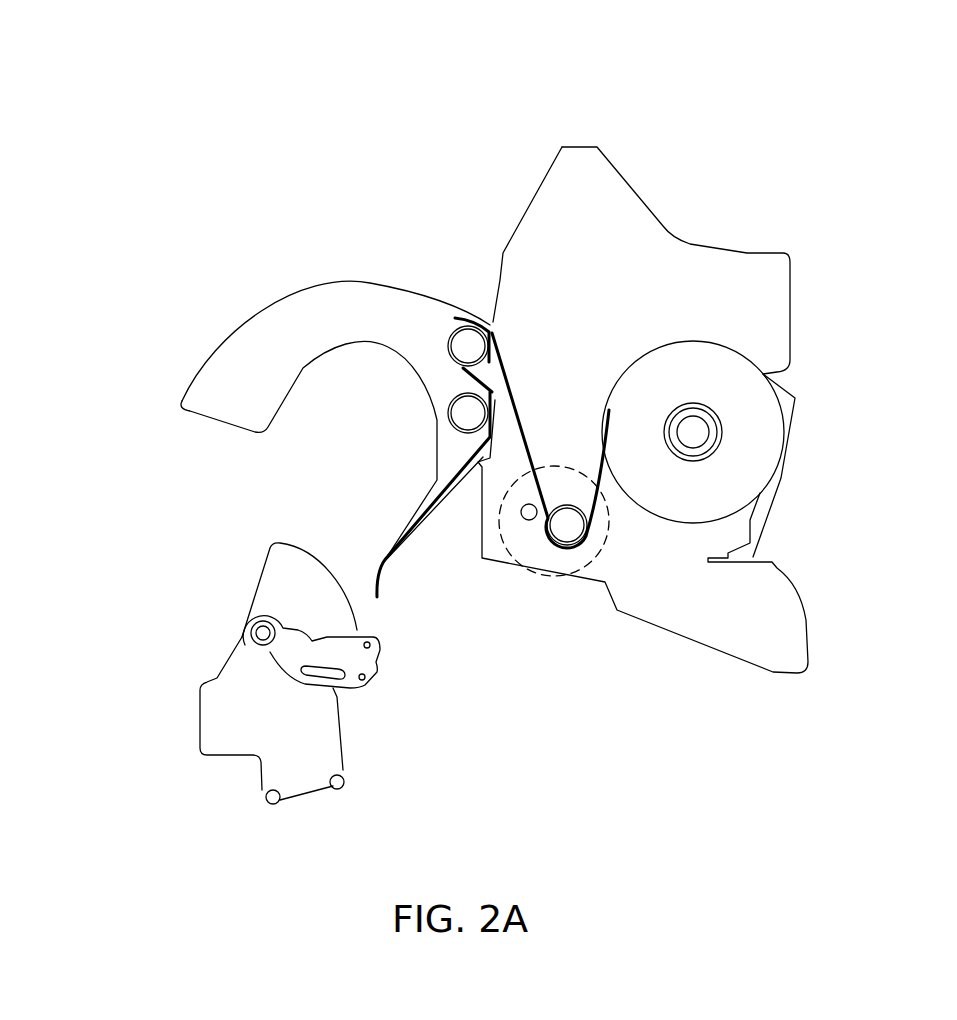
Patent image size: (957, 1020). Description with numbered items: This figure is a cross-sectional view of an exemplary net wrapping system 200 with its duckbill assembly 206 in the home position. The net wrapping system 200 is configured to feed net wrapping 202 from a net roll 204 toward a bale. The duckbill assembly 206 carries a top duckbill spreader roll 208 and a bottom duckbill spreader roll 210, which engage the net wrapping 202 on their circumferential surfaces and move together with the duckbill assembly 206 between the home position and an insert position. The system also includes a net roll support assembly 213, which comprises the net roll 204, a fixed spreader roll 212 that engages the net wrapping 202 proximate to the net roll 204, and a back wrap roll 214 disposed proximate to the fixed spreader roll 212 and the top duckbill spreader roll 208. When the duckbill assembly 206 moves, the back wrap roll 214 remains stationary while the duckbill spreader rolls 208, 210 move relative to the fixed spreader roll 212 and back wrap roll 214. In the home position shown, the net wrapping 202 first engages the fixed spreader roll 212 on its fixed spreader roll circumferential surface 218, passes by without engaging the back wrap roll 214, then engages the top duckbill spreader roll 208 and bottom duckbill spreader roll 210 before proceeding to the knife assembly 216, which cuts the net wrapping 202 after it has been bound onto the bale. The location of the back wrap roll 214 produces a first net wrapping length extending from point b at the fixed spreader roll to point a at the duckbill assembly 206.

The net wrapping system 200 is at (301, 149).
The net wrapping 202 is at (520, 420).
The net roll 204 is at (720, 373).
The duckbill assembly 206 is at (287, 322).
The top duckbill spreader roll 208 is at (463, 342).
The bottom duckbill spreader roll 210 is at (466, 412).
The fixed spreader roll 212 is at (572, 545).
The net roll support assembly 213 is at (572, 147).
The back wrap roll 214 is at (521, 514).
The knife assembly 216 is at (287, 657).
The fixed spreader roll circumferential surface 218 is at (567, 500).
The point a is at (491, 328).
The point b is at (541, 527).